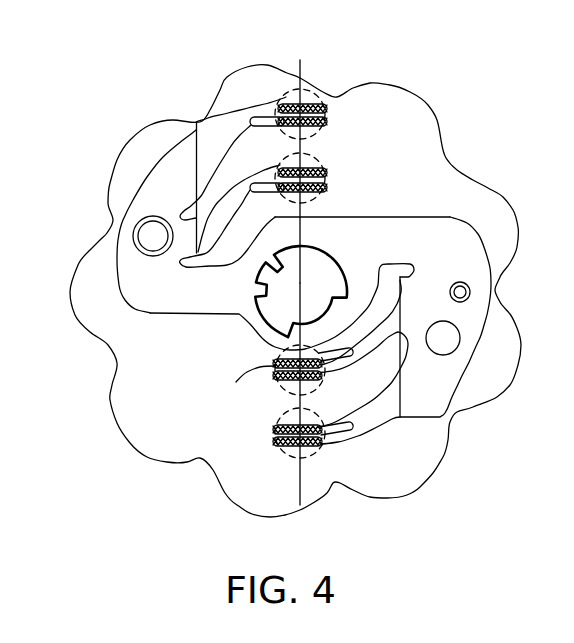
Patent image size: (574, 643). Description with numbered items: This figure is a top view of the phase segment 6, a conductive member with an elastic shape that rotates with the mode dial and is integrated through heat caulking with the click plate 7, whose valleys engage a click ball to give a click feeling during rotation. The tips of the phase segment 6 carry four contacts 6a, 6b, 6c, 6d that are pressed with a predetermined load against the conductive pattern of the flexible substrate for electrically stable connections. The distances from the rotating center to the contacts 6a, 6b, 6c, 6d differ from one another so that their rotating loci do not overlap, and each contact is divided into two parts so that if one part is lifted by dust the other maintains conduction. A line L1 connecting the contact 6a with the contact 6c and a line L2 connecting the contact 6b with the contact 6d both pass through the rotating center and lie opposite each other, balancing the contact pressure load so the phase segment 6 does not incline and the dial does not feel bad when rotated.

The phase segment 6 is at (413, 217).
The contact 6a is at (323, 110).
The contact 6b is at (292, 454).
The contact 6c is at (323, 175).
The contact 6d is at (236, 382).
The click plate 7 is at (150, 420).
The line L1 is at (308, 80).
The line L2 is at (297, 488).